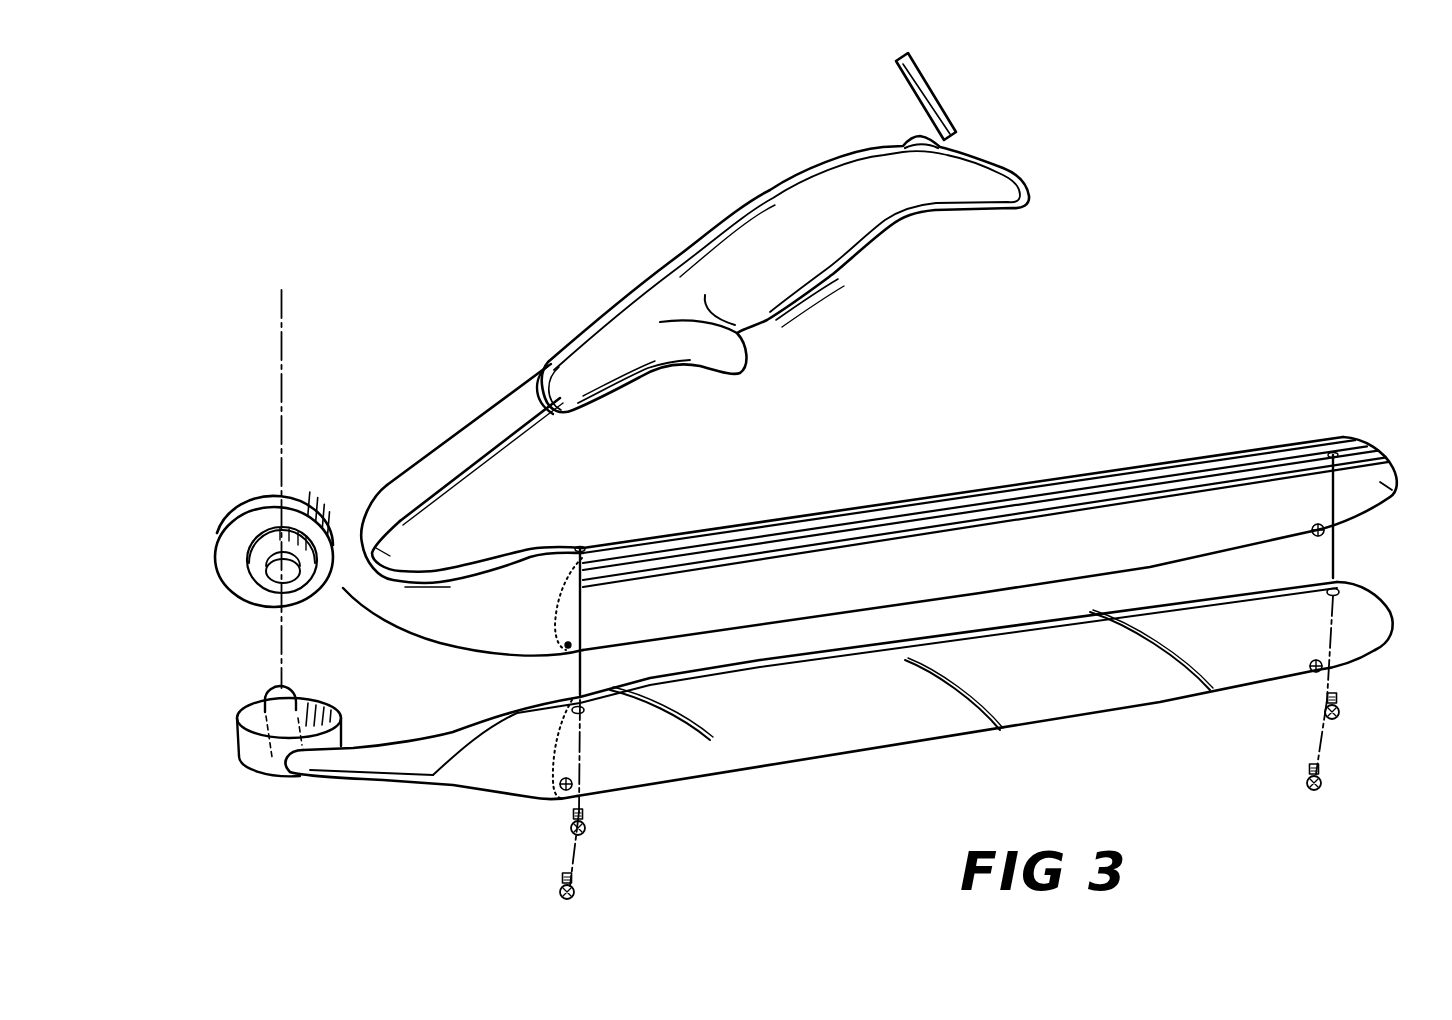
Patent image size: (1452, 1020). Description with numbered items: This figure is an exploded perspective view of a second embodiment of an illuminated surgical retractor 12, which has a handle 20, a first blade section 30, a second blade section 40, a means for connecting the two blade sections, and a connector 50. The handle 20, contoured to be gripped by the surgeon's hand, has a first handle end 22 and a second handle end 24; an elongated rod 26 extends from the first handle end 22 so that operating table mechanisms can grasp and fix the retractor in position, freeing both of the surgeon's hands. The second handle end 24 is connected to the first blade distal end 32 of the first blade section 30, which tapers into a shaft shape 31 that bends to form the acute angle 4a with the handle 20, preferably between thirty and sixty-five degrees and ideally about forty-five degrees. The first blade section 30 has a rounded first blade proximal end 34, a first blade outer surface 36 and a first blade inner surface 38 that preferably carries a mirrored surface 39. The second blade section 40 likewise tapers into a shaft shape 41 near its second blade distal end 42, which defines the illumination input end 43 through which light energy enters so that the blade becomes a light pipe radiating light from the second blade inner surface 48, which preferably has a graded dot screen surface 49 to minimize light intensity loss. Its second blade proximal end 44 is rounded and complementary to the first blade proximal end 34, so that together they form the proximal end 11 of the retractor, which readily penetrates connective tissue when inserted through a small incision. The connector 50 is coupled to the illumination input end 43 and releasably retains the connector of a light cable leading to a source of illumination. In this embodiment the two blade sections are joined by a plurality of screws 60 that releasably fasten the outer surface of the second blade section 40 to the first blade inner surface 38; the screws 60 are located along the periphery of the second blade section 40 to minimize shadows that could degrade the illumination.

The proximal end 11 is at (1392, 500).
The illuminated surgical retractor 12 is at (773, 283).
The handle 20 is at (733, 245).
The first handle end 22 is at (950, 144).
The second handle end 24 is at (572, 404).
The elongated rod 26 is at (928, 85).
The first blade section 30 is at (896, 497).
The shaft shape 31 is at (357, 596).
The first blade distal end 32 is at (547, 370).
The first blade proximal end 34 is at (1372, 472).
The first blade outer surface 36 is at (992, 487).
The first blade inner surface 38 is at (1095, 517).
The mirrored surface 39 is at (713, 585).
The second blade section 40 is at (882, 728).
The shaft shape 41 is at (312, 785).
The second blade distal end 42 is at (302, 692).
The illumination input end 43 is at (260, 690).
The second blade proximal end 44 is at (1380, 628).
The second blade inner surface 48 is at (1027, 705).
The graded dot screen surface 49 is at (942, 715).
The connector 50 is at (305, 492).
The screws 60 is at (1330, 785).
The angle a 4a is at (375, 553).